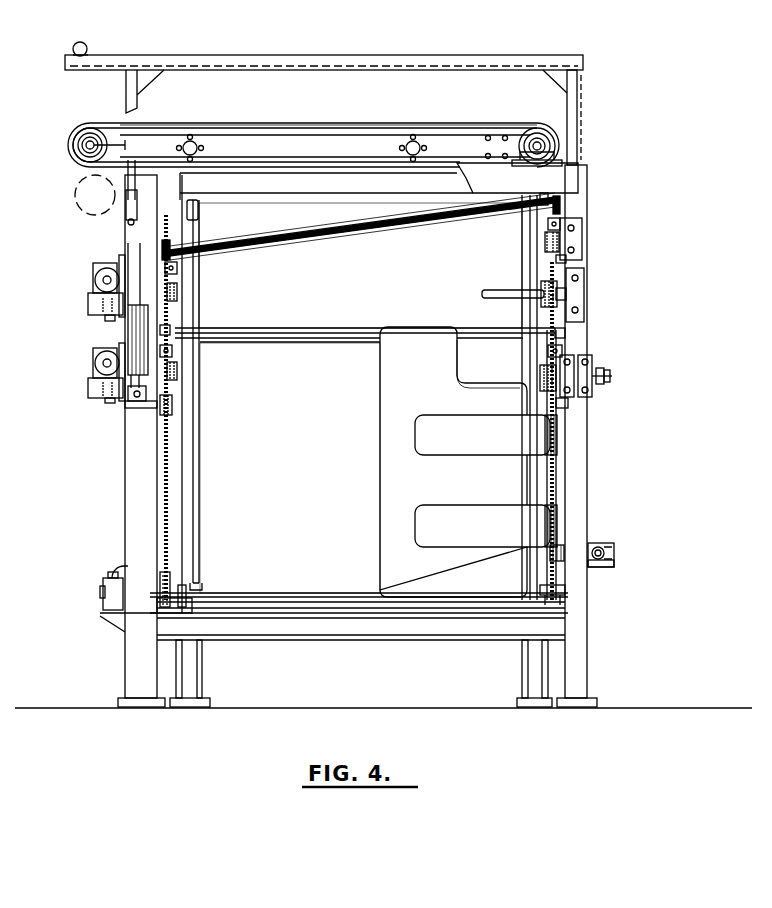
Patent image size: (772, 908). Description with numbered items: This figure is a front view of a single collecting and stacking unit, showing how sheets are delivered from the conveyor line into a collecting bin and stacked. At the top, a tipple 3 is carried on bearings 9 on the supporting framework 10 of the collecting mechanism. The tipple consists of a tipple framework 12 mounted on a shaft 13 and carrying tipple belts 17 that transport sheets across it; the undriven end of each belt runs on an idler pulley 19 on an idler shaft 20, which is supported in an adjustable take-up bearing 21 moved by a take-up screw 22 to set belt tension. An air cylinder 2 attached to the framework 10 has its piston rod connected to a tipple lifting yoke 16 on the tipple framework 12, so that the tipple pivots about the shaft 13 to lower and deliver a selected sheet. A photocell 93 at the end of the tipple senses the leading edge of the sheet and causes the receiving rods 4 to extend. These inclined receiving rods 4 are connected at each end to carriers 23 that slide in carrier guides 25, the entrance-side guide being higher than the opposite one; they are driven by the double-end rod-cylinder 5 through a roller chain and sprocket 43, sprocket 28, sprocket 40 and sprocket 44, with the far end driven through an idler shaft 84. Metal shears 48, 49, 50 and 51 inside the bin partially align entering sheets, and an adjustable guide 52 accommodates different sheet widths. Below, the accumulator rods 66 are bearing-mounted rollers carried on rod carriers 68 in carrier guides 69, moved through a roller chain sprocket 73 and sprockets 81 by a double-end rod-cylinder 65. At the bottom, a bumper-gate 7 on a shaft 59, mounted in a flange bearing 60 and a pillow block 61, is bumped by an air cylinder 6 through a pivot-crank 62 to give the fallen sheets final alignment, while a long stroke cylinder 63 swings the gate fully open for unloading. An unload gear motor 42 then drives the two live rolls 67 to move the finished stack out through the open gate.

The air cylinder 2 is at (135, 342).
The tipple 3 is at (296, 146).
The receiving rods 4 is at (307, 238).
The double-end rod-cylinder 5 is at (93, 272).
The air cylinder 6 is at (596, 568).
The bumper-gate 7 is at (393, 472).
The bearings 9 is at (560, 148).
The framework 10 is at (578, 172).
The tipple framework 12 is at (232, 128).
The shaft 13 is at (538, 122).
The tipple lifting yoke 16 is at (137, 191).
The tipple belts 17 is at (400, 118).
The idler pulley 19 is at (72, 150).
The idler shaft 20 is at (75, 140).
The take-up bearing 21 is at (85, 130).
The take-up screw 22 is at (117, 147).
The carriers 23 is at (172, 248).
The carrier guides 25 is at (177, 268).
The sprocket 28 is at (170, 317).
The sprocket 40 is at (556, 320).
The unload gear motor 42 is at (122, 560).
The sprocket 43 is at (103, 304).
The sprocket 44 is at (557, 253).
The metal shear 48 is at (272, 214).
The metal shear 49 is at (422, 280).
The metal shear 50 is at (321, 460).
The metal shear 51 is at (522, 360).
The adjustable guide 52 is at (197, 527).
The shaft 59 is at (558, 481).
The flange bearing 60 is at (560, 597).
The pillow block 61 is at (586, 405).
The pivot-crank 62 is at (562, 547).
The long stroke cylinder 63 is at (614, 551).
The double-end rod-cylinder 65 is at (93, 365).
The accumulator rods 66 is at (312, 328).
The live rolls 67 is at (273, 594).
The rod carriers 68 is at (178, 333).
The carrier guides 69 is at (173, 350).
The roller chain sprocket 73 is at (183, 412).
The roller chain sprockets 81 is at (108, 392).
The idler shaft 84 is at (582, 238).
The photocell 93 is at (84, 48).